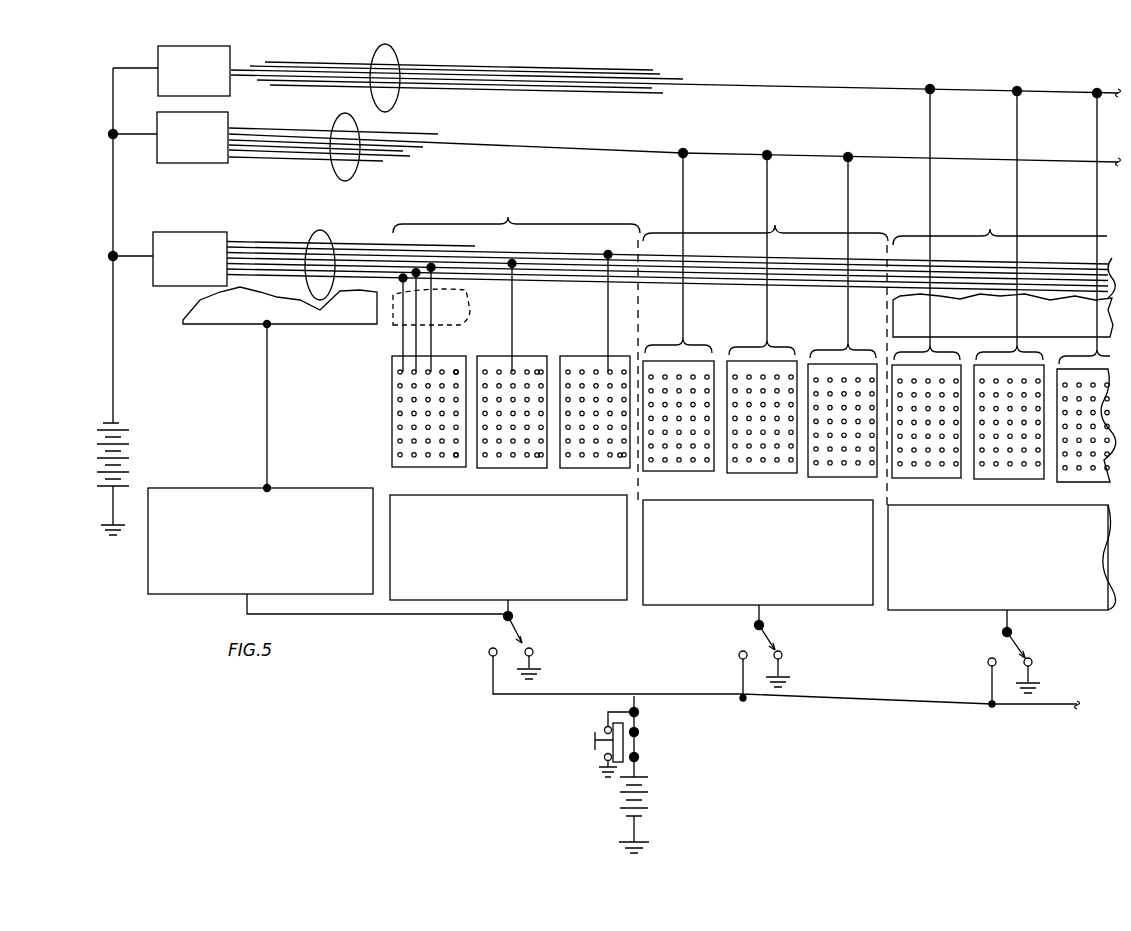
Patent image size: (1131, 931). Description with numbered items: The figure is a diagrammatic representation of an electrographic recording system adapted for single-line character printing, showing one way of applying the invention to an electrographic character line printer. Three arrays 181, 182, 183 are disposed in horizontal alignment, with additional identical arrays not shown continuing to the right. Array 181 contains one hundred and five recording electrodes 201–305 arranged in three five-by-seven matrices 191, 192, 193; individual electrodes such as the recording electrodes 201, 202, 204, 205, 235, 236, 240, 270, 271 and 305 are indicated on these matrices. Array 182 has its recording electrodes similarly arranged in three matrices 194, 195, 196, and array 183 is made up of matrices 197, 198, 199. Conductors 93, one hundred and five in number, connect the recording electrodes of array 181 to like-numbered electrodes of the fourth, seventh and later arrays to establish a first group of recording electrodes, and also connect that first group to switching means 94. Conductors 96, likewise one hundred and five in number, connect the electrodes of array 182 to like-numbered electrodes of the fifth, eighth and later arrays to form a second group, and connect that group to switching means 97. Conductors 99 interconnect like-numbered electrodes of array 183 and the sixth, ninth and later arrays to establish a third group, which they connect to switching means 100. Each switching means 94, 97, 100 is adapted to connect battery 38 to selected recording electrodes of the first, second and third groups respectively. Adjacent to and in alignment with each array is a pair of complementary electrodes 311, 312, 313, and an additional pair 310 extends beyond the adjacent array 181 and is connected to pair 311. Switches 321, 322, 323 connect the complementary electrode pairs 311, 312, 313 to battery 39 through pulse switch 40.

The battery 38 is at (98, 470).
The battery 39 is at (648, 795).
The pulse switch 40 is at (640, 740).
The conductors 93 is at (331, 232).
The switching means 94 is at (223, 233).
The conductors 96 is at (353, 168).
The switching means 97 is at (207, 165).
The conductors 99 is at (397, 98).
The switching means 100 is at (232, 87).
The array 181 is at (516, 214).
The array 182 is at (765, 220).
The array 183 is at (1000, 225).
The matrix 191 is at (407, 468).
The matrix 192 is at (492, 470).
The matrix 193 is at (572, 468).
The matrix 194 is at (693, 472).
The matrix 195 is at (767, 475).
The matrix 196 is at (840, 478).
The matrix 197 is at (938, 480).
The matrix 198 is at (1005, 481).
The matrix 199 is at (1103, 483).
The recording electrode 201 is at (400, 371).
The recording electrode 202 is at (412, 374).
The recording electrode 204 is at (443, 373).
The recording electrode 205 is at (456, 371).
The recording electrode 235 is at (453, 458).
The recording electrode 236 is at (485, 371).
The recording electrode 240 is at (538, 371).
The recording electrode 270 is at (537, 458).
The recording electrode 271 is at (570, 372).
The recording electrode 305 is at (620, 458).
The pair of complementary electrodes 310 is at (213, 312).
The pair of complementary electrodes 311 is at (605, 590).
The pair of complementary electrodes 312 is at (685, 592).
The pair of complementary electrodes 313 is at (942, 322).
The switch 321 is at (515, 645).
The switch 322 is at (765, 650).
The switch 323 is at (1015, 658).